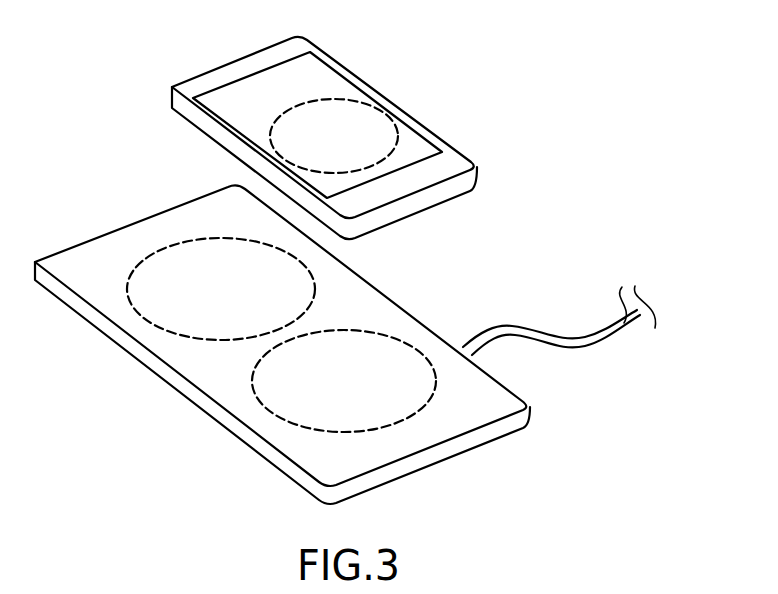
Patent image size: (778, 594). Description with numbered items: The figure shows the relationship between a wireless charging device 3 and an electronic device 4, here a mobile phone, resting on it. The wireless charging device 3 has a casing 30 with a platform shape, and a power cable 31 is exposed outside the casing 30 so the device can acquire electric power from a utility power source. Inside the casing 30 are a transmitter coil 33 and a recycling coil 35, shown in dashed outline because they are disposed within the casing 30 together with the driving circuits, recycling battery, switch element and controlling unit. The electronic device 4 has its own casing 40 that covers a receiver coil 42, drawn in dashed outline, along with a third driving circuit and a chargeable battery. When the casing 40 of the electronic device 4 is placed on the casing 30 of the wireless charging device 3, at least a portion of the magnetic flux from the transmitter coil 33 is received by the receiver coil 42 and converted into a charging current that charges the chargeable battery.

The wireless charging device 3 is at (345, 340).
The casing 30 is at (483, 438).
The power cable 31 is at (592, 340).
The transmitter coil 33 is at (402, 342).
The recycling coil 35 is at (140, 313).
The electronic device 4 is at (324, 129).
The casing 40 is at (240, 67).
The receiver coil 42 is at (380, 113).